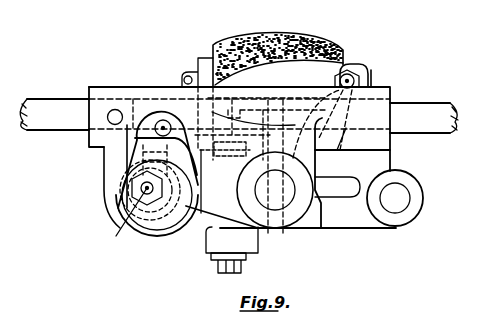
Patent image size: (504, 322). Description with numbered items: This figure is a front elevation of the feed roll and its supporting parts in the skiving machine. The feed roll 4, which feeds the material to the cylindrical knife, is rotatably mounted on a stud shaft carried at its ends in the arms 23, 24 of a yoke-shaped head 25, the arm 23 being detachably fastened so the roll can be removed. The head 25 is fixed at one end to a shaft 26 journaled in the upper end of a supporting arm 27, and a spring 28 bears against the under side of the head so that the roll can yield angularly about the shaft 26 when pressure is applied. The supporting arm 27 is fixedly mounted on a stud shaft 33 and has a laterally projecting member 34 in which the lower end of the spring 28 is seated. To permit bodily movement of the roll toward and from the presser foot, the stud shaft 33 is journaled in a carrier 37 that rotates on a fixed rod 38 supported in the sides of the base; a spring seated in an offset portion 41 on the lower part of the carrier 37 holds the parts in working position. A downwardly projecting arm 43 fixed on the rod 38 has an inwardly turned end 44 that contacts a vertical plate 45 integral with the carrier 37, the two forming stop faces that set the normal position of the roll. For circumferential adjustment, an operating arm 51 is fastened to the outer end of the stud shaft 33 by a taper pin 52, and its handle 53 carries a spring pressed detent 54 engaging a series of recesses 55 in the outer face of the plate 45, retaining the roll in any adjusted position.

The feed roll 4 is at (312, 50).
The arm 23 is at (198, 58).
The arm 24 is at (362, 68).
The yoke-shaped head 25 is at (272, 65).
The shaft 26 is at (371, 80).
The supporting arm 27 is at (390, 151).
The spring 28 is at (214, 181).
The stud shaft 33 is at (317, 224).
The laterally projecting member 34 is at (222, 273).
The carrier 37 is at (396, 156).
The fixed rod 38 is at (427, 110).
The offset portion 41 is at (415, 203).
The downwardly projecting arm 43 is at (108, 176).
The inwardly turned end 44 is at (141, 236).
The vertical plate 45 is at (147, 117).
The operating arm 51 is at (198, 240).
The taper pin 52 is at (285, 228).
The handle 53 is at (150, 232).
The spring pressed detent 54 is at (117, 233).
The recesses 55 is at (163, 108).